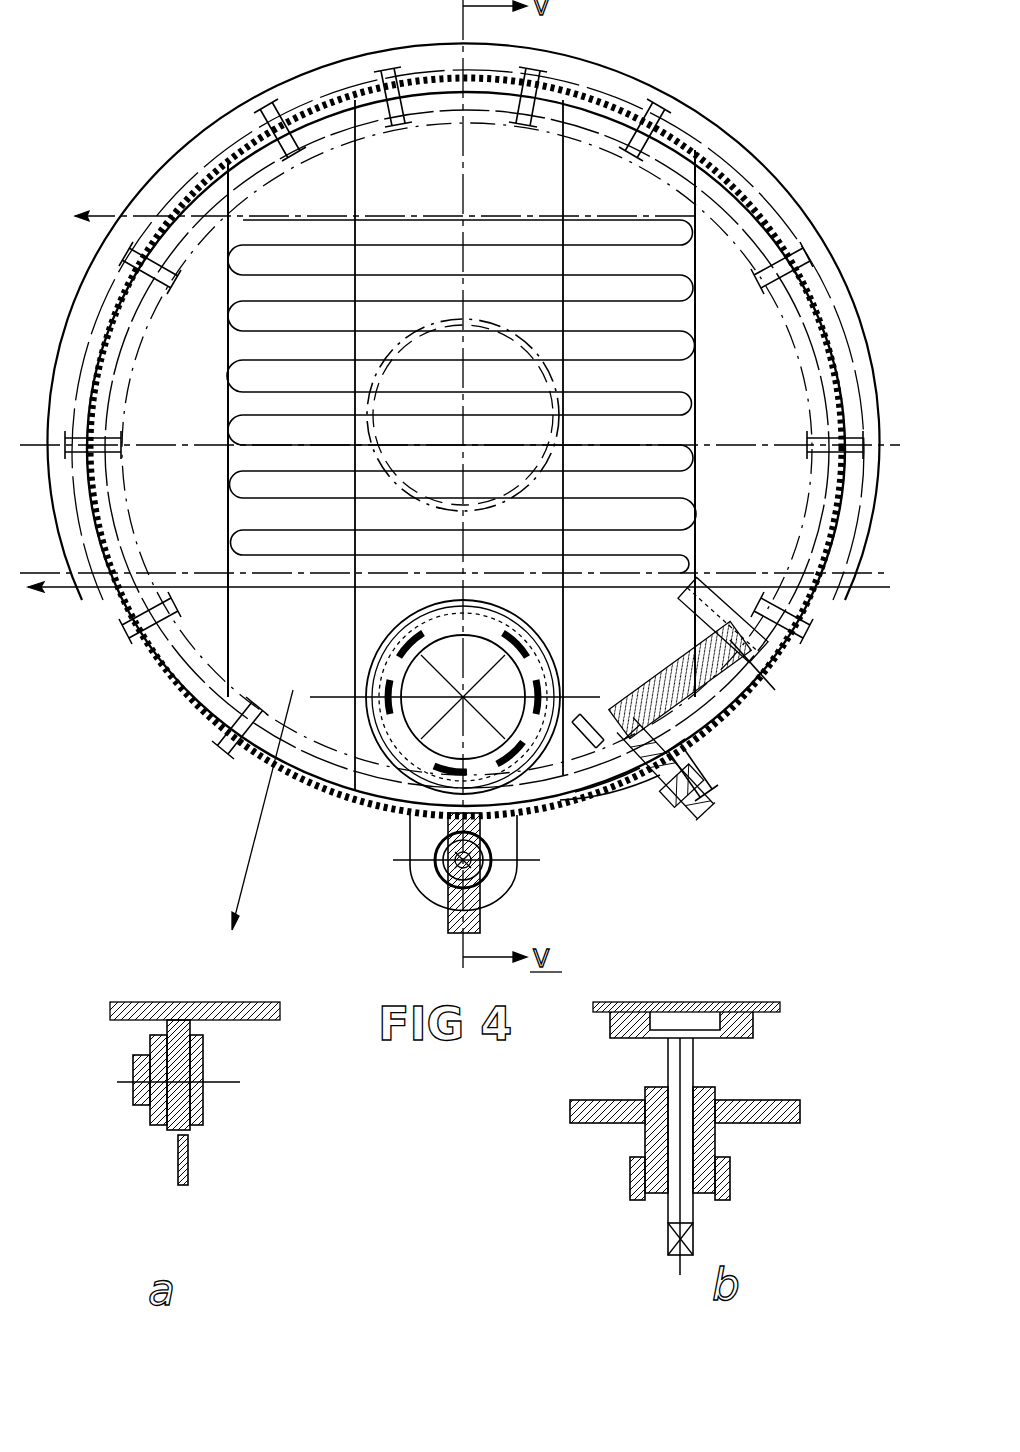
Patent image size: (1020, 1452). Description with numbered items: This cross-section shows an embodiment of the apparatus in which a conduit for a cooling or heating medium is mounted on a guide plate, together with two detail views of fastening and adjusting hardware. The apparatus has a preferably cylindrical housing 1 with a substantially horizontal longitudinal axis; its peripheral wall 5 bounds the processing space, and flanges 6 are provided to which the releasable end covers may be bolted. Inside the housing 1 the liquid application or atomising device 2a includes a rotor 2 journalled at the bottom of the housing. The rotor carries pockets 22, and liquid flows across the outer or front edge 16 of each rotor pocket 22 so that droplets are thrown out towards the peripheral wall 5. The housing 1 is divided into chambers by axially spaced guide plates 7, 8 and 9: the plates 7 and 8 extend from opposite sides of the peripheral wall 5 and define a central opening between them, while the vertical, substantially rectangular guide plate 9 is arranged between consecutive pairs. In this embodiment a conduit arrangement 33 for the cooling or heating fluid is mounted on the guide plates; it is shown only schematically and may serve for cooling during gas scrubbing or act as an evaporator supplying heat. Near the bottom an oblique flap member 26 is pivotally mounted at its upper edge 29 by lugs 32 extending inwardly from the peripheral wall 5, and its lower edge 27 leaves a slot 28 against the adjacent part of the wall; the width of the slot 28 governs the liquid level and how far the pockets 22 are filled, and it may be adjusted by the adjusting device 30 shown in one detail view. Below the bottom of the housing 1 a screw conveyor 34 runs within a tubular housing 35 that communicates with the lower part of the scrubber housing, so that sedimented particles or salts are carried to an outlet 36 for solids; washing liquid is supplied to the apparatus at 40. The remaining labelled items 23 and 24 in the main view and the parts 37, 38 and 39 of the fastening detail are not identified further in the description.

In FIG. 4, the housing 1 is at (242, 88).
In FIG. 4, the rotor 2 is at (455, 697).
In FIG. 4, the liquid application device 2a is at (540, 692).
In FIG. 4, the peripheral wall 5 is at (690, 150).
In FIG. 4a, the peripheral wall 5 is at (222, 1016).
In FIG. 4, the flanges 6 is at (640, 98).
In FIG. 4, the guide plate 7 is at (199, 428).
In FIG. 4a, the guide plate 7 is at (190, 1160).
In FIG. 4, the guide plate 8 is at (728, 423).
In FIG. 4, the vertical guide plate 9 is at (459, 445).
In FIG. 4, the outer edge of rotor pocket 16 is at (490, 620).
In FIG. 4, the rotor pocket 22 is at (543, 647).
In FIG. 4, the bearing pad 23 is at (372, 670).
In FIG. 4, the clamp bolt 24 is at (392, 778).
In FIG. 4, the flap member 26 is at (580, 725).
In FIG. 4, the lower edge 27 is at (585, 797).
In FIG. 4, the slot 28 is at (577, 813).
In FIG. 4, the upper edge 29 is at (688, 657).
In FIG. 4, the adjusting device 30 is at (586, 790).
In FIG. 4b, the adjusting device 30 is at (700, 1087).
In FIG. 4, the lugs 32 is at (760, 680).
In FIG. 4, the conduit arrangement 33 is at (476, 214).
In FIG. 4, the screw conveyor 34 is at (490, 870).
In FIG. 4, the tubular housing 35 is at (436, 882).
In FIG. 4, the outlet for solids 36 is at (447, 930).
In FIG. 4a, the bolt 37 is at (182, 1020).
In FIG. 4a, the spacer sleeve 38 is at (205, 1062).
In FIG. 4a, the nut 39 is at (150, 1125).
In FIG. 4, the washing liquid supply 40 is at (728, 741).